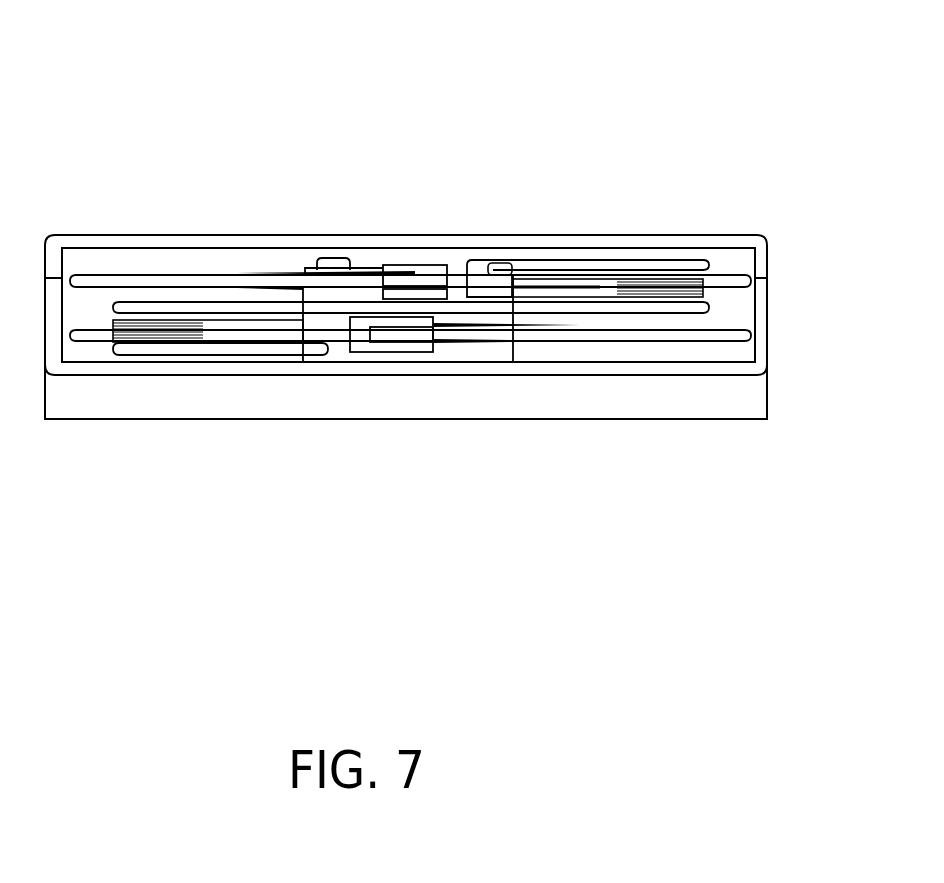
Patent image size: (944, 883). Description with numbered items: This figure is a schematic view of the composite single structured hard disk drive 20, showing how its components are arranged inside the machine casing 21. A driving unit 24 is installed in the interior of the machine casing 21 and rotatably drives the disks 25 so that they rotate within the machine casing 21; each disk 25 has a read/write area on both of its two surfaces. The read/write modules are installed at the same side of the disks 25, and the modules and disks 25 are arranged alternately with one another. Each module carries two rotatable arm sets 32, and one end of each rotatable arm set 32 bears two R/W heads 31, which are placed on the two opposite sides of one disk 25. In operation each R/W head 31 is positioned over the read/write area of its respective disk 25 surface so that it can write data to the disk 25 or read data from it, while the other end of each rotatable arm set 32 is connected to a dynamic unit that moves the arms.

The composite single structured hard disk drive 20 is at (512, 222).
The machine casing 21 is at (603, 232).
The driving unit 24 is at (460, 353).
The disk 25 is at (108, 287).
The R/W head 31 is at (270, 272).
The rotatable arm set 32 is at (417, 287).